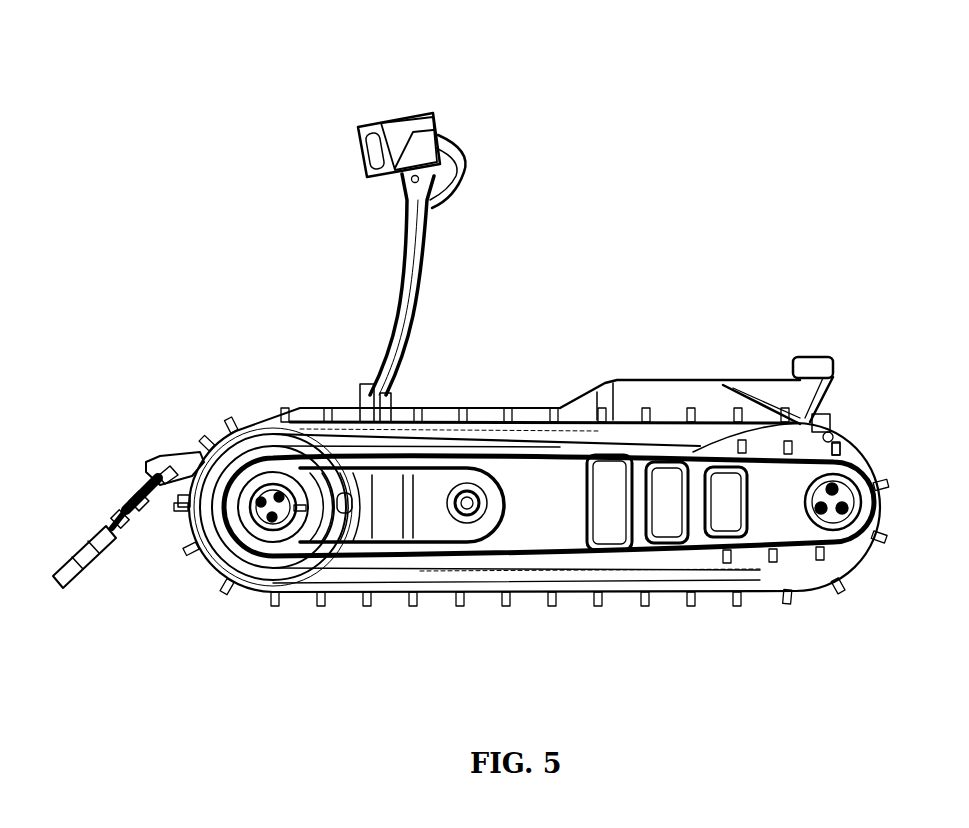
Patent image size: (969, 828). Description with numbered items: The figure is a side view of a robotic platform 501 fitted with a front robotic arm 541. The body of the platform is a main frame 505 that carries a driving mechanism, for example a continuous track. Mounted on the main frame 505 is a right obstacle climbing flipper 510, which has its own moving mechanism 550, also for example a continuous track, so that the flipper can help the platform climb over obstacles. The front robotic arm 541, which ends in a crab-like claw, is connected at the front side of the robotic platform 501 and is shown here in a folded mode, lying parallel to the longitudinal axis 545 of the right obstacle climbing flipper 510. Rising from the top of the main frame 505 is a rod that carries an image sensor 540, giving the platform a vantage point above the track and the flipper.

The robotic platform 501 is at (459, 396).
The main frame 505 is at (630, 349).
The right obstacle climbing flipper 510 is at (570, 549).
The image sensor 540 is at (404, 96).
The front robotic arm 541 is at (104, 573).
The longitudinal axis 545 is at (784, 489).
The moving mechanism 550 is at (710, 560).